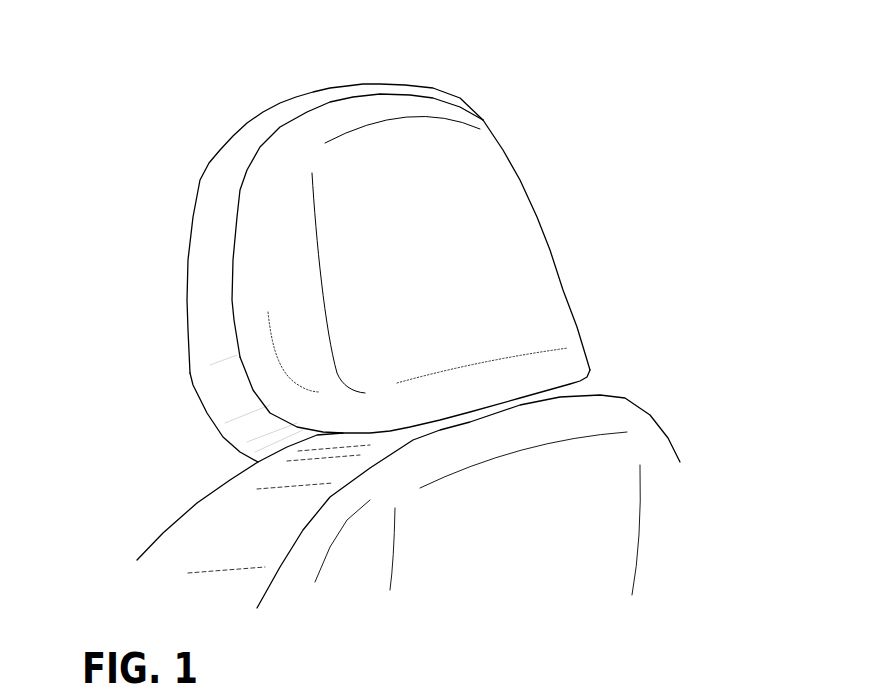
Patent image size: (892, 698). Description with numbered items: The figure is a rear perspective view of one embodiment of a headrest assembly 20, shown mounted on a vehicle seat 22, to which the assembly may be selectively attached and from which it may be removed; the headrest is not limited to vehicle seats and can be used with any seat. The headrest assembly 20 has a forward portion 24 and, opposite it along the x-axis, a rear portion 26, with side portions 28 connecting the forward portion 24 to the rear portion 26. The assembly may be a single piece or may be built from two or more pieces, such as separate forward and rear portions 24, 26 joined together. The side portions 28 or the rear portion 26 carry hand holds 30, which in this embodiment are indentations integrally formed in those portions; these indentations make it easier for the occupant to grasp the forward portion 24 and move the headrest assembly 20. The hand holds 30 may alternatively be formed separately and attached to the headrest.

The headrest assembly 20 is at (533, 93).
The vehicle seat 22 is at (647, 437).
The forward portion 24 is at (165, 235).
The rear portion 26 is at (565, 237).
The side portions 28 is at (192, 373).
The hand holds 30 is at (250, 295).